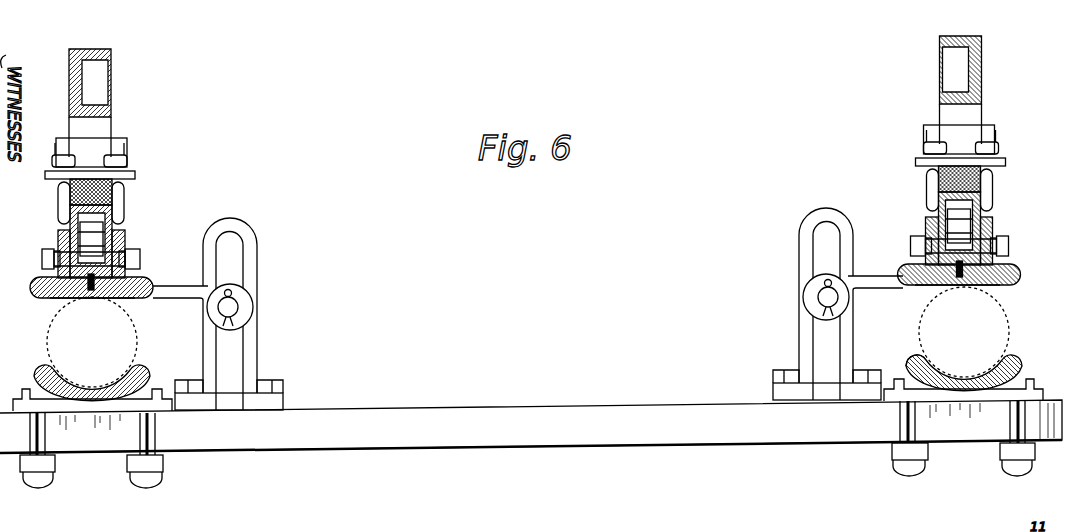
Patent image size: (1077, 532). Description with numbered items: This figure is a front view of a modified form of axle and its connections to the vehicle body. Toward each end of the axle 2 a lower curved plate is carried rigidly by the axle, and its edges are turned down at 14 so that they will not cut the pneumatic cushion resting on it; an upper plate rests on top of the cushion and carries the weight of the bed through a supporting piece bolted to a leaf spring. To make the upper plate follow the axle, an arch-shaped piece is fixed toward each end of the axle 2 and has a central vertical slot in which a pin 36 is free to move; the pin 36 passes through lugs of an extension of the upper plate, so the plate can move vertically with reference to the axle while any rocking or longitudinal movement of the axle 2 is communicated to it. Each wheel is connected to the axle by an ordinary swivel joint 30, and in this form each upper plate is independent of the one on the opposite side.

The axle 2 is at (588, 405).
The turned down edges 14 is at (913, 350).
The swivel joint 30 is at (248, 307).
The pin 36 is at (815, 298).